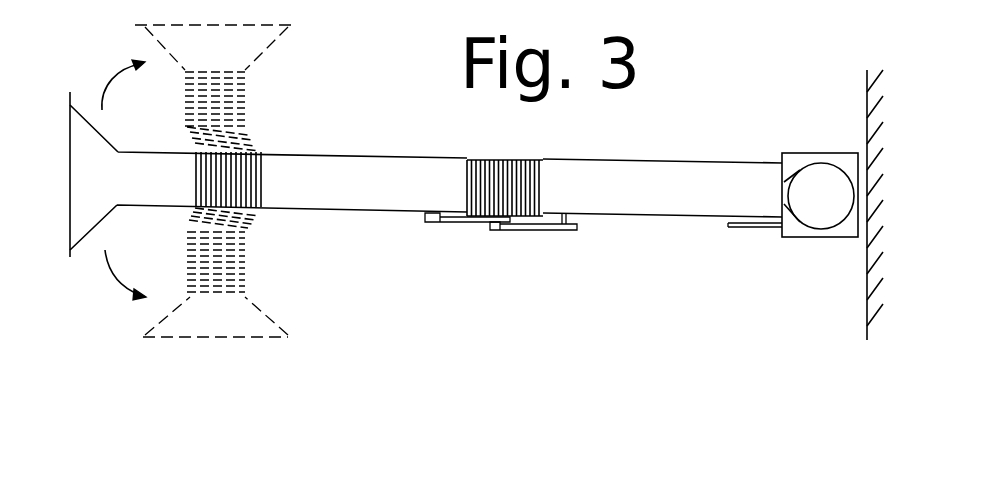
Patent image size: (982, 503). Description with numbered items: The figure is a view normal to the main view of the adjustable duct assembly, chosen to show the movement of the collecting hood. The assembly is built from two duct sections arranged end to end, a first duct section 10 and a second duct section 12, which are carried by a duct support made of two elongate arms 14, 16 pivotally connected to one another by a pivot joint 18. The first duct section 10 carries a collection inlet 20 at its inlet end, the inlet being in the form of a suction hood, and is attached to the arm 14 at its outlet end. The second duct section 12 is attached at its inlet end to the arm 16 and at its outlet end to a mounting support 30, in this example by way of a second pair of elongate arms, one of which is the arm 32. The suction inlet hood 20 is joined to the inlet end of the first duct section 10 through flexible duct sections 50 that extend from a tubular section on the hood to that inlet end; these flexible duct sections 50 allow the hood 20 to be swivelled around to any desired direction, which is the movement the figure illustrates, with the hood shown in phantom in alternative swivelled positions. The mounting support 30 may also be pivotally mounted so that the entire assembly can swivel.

The first duct section 10 is at (375, 160).
The second duct section 12 is at (651, 166).
The elongate arm 14 is at (430, 222).
The elongate arm 16 is at (570, 231).
The pivot joint 18 is at (497, 231).
The collection inlet 20 is at (56, 272).
The mounting support 30 is at (786, 153).
The elongate arm 32 is at (736, 228).
The flexible duct section 50 is at (262, 152).